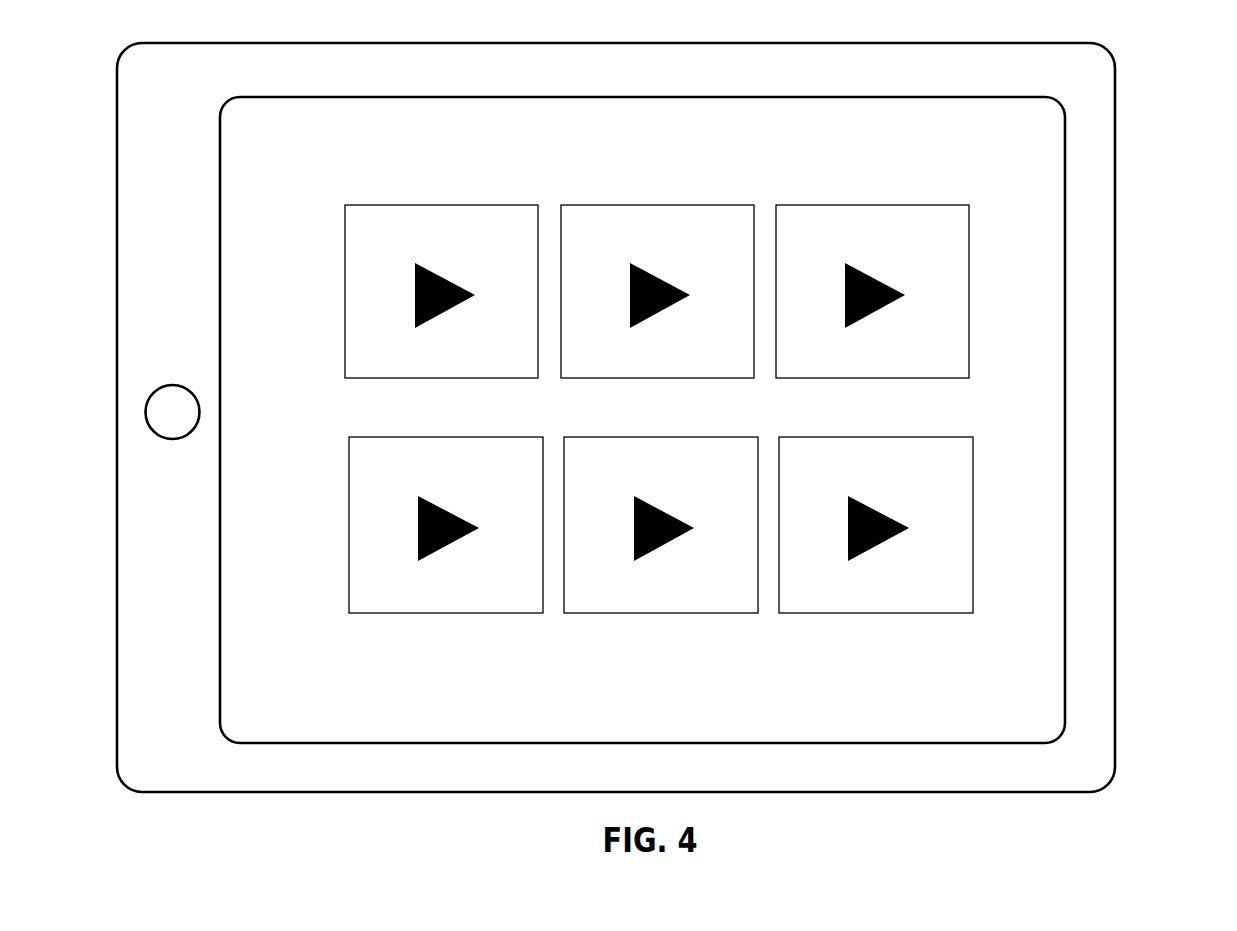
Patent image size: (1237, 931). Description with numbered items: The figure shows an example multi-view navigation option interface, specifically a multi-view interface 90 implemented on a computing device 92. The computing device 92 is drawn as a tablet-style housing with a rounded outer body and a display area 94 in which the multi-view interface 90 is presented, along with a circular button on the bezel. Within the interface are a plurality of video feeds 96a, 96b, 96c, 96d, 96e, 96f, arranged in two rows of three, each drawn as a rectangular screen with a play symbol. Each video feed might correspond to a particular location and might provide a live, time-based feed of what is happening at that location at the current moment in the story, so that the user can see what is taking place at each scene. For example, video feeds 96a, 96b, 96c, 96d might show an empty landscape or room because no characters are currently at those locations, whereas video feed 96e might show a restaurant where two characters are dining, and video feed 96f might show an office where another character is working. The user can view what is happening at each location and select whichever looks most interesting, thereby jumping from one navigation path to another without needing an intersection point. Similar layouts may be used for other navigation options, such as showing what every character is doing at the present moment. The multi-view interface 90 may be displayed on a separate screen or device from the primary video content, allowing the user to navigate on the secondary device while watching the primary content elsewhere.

The multi-view interface 90 is at (1083, 92).
The computing device 92 is at (1157, 710).
The display screen 94 is at (238, 223).
The video feed 96a is at (413, 205).
The video feed 96b is at (657, 205).
The video feed 96c is at (865, 205).
The video feed 96d is at (465, 613).
The video feed 96e is at (677, 613).
The video feed 96f is at (903, 613).